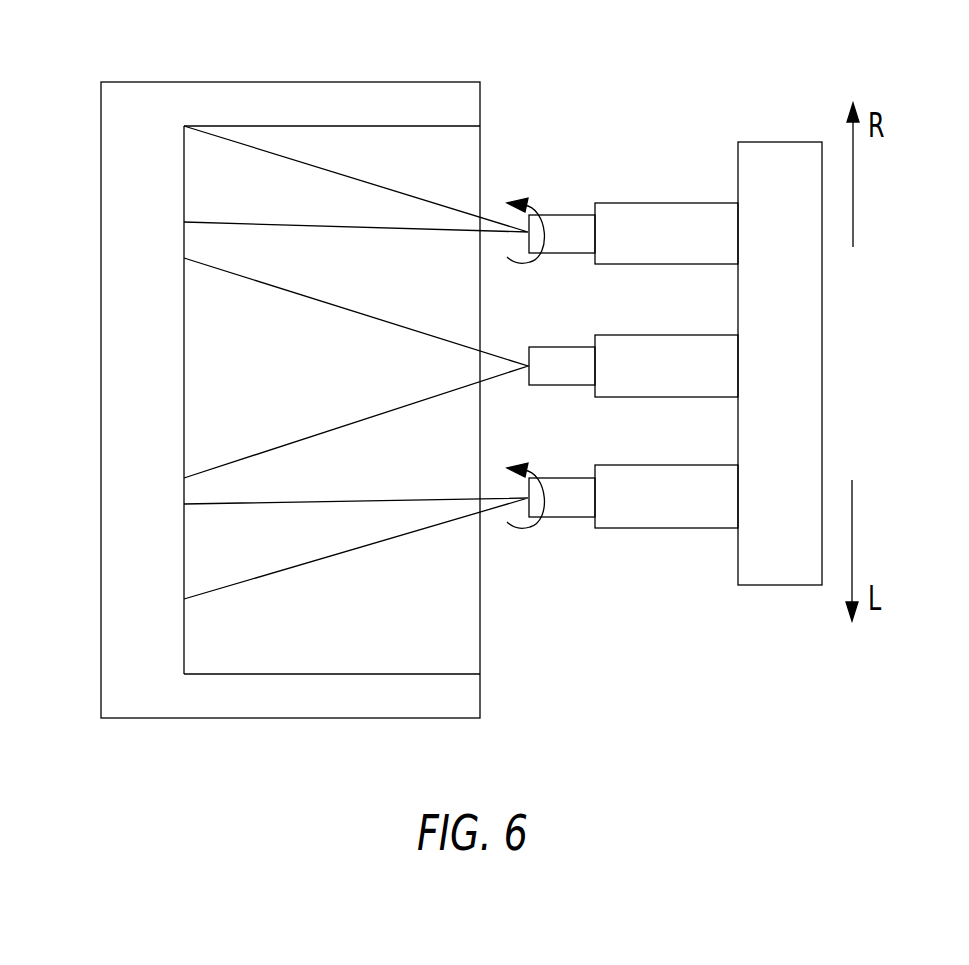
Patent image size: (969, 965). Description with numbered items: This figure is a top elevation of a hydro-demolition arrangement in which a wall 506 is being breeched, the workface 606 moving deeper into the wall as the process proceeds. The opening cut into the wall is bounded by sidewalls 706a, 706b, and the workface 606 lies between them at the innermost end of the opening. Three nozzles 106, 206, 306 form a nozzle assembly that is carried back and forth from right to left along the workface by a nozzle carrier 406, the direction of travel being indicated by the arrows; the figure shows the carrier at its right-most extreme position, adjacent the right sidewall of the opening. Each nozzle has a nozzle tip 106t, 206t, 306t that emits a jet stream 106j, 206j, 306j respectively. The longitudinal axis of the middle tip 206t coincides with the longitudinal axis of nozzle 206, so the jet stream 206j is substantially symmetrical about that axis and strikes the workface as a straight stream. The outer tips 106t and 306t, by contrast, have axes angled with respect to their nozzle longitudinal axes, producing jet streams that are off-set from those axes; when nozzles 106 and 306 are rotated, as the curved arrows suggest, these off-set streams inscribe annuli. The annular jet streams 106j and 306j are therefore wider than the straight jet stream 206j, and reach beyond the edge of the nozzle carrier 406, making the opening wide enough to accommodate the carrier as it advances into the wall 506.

The wall 506 is at (204, 82).
The workface 606 is at (184, 343).
The sidewall of the opening 706a is at (452, 125).
The sidewall of the opening 706b is at (399, 676).
The jet stream 306j is at (323, 192).
The jet stream 206j is at (323, 330).
The jet stream 106j is at (329, 522).
The nozzle tip 306t is at (564, 237).
The nozzle tip 206t is at (564, 370).
The nozzle tip 106t is at (564, 501).
The nozzle 306 is at (627, 265).
The nozzle 206 is at (627, 398).
The nozzle 106 is at (627, 529).
The nozzle carrier 406 is at (822, 363).